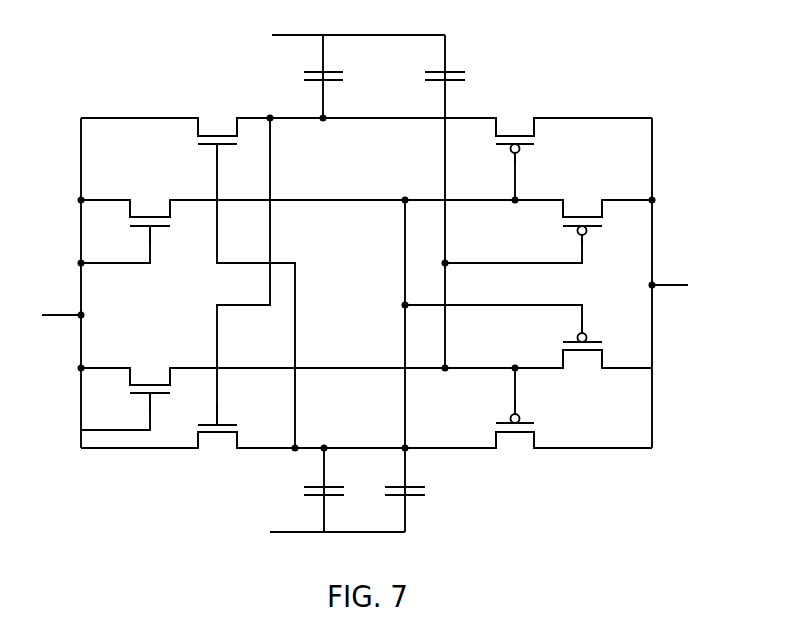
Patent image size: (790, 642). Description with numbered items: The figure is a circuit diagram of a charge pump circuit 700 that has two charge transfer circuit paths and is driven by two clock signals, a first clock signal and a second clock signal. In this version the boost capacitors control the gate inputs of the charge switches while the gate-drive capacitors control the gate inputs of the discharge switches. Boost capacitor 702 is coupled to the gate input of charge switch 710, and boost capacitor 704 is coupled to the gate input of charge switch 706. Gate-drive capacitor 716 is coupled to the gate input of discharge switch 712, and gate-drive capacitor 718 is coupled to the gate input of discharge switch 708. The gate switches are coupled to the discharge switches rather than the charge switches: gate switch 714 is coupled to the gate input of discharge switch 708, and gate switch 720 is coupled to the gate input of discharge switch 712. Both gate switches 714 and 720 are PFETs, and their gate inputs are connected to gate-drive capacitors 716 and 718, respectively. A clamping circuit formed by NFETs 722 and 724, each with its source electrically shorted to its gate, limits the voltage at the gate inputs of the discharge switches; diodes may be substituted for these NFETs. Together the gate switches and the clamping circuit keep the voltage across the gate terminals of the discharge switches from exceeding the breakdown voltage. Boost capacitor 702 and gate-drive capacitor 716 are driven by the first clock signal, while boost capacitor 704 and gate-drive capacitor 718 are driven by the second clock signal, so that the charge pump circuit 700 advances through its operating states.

The charge pump circuit 700 is at (636, 47).
The boost capacitor 702 is at (333, 70).
The boost capacitor 704 is at (334, 485).
The charge switch 706 is at (212, 148).
The discharge switch 708 is at (521, 152).
The charge switch 710 is at (226, 423).
The discharge switch 712 is at (523, 420).
The gate switch 714 is at (589, 232).
The gate-drive capacitor 716 is at (455, 70).
The gate-drive capacitor 718 is at (415, 485).
The gate switch 720 is at (589, 337).
The NFET 722 is at (157, 228).
The NFET 724 is at (157, 395).